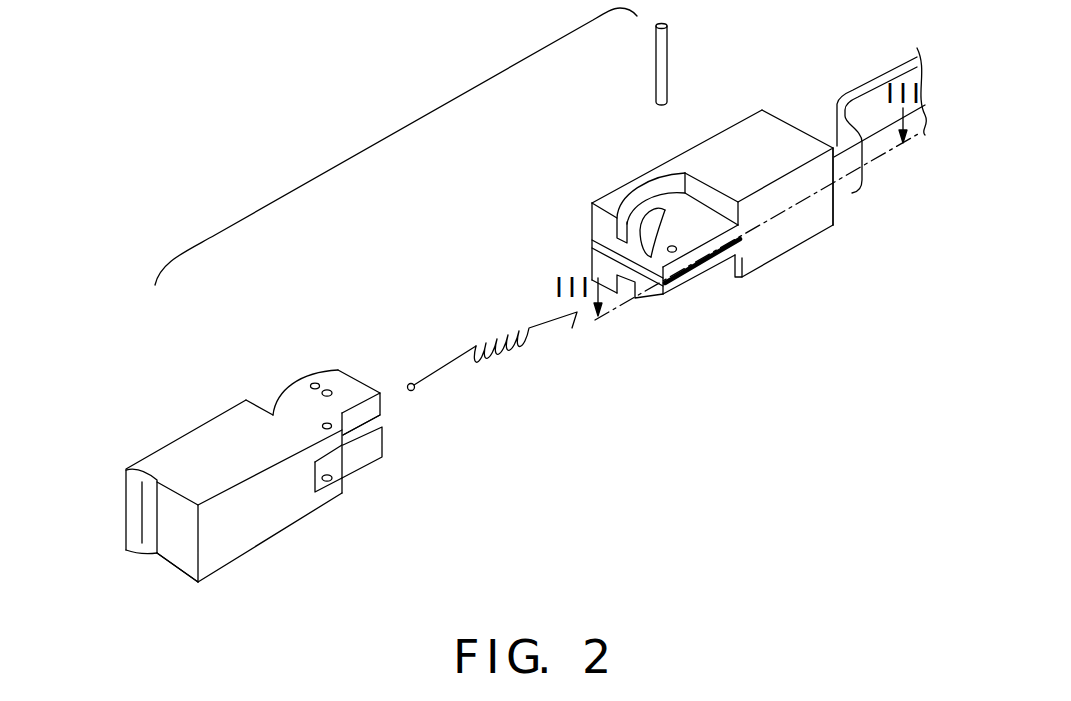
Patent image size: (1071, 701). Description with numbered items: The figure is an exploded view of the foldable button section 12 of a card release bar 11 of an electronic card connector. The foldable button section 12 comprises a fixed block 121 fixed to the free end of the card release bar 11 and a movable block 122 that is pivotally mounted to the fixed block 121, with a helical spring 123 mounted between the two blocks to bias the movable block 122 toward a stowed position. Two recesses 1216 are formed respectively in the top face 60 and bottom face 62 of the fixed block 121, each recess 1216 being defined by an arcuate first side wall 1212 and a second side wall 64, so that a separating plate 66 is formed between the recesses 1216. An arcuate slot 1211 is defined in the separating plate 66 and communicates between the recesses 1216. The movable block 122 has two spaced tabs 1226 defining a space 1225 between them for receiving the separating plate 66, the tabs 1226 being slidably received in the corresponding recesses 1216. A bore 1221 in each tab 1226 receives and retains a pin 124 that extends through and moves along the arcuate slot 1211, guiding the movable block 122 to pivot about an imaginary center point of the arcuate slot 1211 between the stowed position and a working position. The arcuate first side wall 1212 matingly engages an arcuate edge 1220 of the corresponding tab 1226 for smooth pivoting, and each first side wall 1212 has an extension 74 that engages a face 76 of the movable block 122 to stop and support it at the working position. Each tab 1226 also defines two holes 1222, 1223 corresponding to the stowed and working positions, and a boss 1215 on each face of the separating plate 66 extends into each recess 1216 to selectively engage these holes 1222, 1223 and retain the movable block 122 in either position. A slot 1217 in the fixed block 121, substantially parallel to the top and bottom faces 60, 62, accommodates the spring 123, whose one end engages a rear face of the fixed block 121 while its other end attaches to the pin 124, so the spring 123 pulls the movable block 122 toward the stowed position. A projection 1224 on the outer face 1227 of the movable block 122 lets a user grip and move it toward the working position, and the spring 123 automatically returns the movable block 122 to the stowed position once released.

The card release bar 11 is at (880, 92).
The foldable button section 12 is at (392, 134).
The top face 60 is at (753, 128).
The bottom face 62 is at (778, 261).
The second side wall 64 is at (740, 201).
The separating plate 66 is at (636, 296).
The extension 74 is at (608, 229).
The face 76 is at (277, 403).
The fixed block 121 is at (717, 222).
The movable block 122 is at (281, 451).
The helical spring 123 is at (517, 345).
The pin 124 is at (663, 55).
The arcuate slot 1211 is at (626, 216).
The first side wall 1212 is at (638, 199).
The boss 1215 is at (688, 250).
The recess 1216 is at (688, 208).
The slot 1217 is at (673, 253).
The arcuate edge 1220 is at (300, 378).
The bore 1221 is at (314, 383).
The hole 1222 is at (329, 390).
The hole 1223 is at (345, 432).
The projection 1224 is at (135, 503).
The space 1225 is at (387, 436).
The tab 1226 is at (352, 367).
The outer face 1227 is at (185, 533).